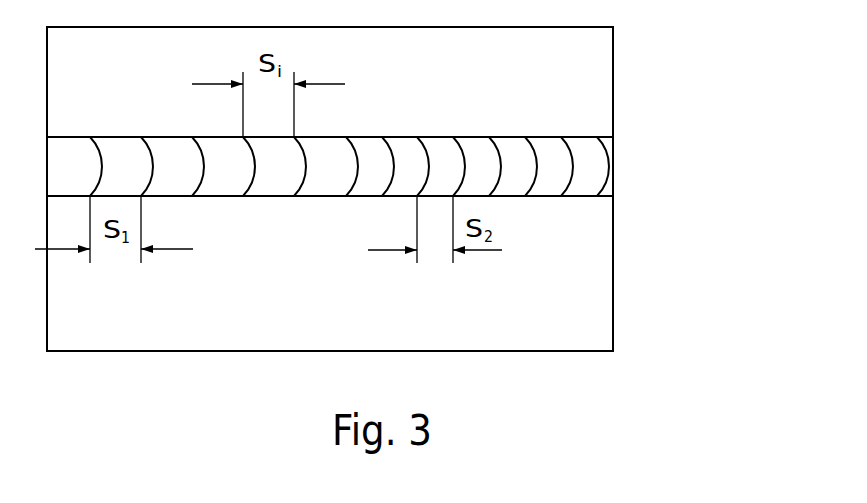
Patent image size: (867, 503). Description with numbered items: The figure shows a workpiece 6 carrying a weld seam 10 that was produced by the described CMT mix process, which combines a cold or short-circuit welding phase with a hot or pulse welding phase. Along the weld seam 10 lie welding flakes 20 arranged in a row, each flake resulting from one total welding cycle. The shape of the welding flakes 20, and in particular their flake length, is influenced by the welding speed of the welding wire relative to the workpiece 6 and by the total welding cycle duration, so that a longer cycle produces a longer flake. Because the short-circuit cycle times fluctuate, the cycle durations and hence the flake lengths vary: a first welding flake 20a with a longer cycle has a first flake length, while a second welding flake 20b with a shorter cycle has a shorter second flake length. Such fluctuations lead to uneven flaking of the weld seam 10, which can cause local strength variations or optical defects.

The workpiece 6 is at (633, 304).
The weld seam 10 is at (480, 130).
The welding flakes 20 is at (333, 173).
The first welding flake 20a is at (110, 145).
The second welding flake 20b is at (545, 172).